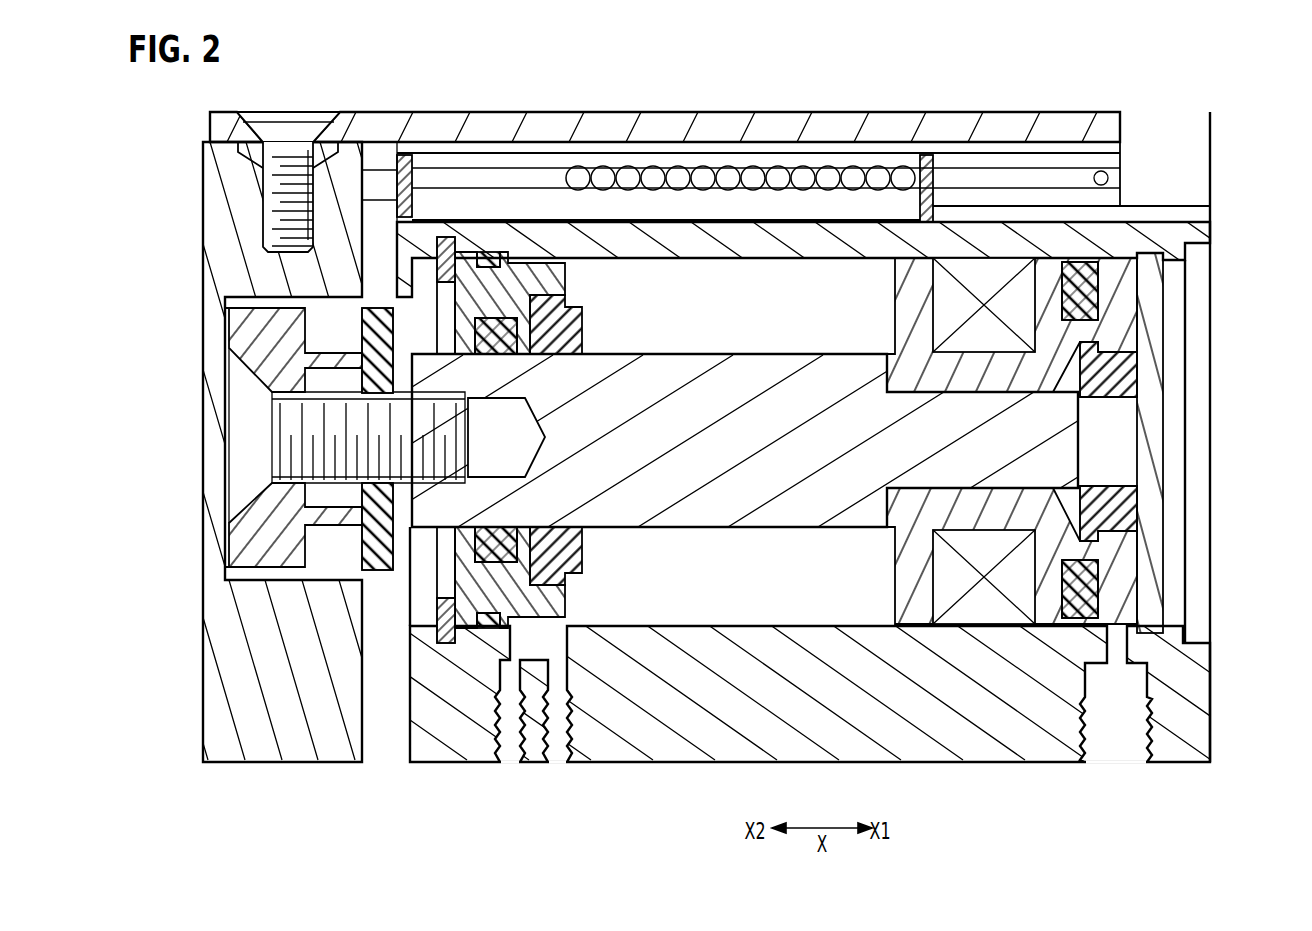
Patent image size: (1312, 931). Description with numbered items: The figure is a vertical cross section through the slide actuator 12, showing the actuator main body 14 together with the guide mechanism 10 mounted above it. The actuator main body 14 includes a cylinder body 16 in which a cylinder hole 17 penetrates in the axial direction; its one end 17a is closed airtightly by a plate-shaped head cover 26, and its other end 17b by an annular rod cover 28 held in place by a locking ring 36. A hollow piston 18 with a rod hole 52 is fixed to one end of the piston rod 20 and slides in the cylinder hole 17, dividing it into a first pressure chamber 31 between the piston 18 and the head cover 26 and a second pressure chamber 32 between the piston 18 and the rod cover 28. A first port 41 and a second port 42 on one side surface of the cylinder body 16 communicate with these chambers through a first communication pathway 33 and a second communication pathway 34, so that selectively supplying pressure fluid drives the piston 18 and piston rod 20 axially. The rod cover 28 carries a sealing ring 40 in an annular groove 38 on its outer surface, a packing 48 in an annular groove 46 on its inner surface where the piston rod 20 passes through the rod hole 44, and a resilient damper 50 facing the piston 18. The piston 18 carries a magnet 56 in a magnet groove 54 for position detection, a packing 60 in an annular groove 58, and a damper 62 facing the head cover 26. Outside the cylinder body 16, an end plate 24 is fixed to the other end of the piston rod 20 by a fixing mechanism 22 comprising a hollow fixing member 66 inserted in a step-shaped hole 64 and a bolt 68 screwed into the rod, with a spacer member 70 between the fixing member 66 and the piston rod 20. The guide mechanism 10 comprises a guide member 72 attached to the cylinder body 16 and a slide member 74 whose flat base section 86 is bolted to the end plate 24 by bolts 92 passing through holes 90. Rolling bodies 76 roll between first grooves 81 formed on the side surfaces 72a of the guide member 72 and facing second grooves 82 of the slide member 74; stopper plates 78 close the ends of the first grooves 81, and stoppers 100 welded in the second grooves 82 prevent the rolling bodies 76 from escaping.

The guide mechanism 10 is at (760, 112).
The slide actuator 12 is at (361, 60).
The actuator main body 14 is at (203, 169).
The cylinder body 16 is at (660, 757).
The cylinder hole 17 is at (812, 287).
The one end of the cylinder hole 17a is at (1185, 256).
The other end of the cylinder hole 17b is at (437, 252).
The piston 18 is at (913, 565).
The piston rod 20 is at (680, 365).
The fixing mechanism 22 is at (145, 325).
The end plate 24 is at (300, 748).
The head cover 26 is at (1158, 398).
The rod cover 28 is at (475, 595).
The first pressure chamber 31 is at (1133, 560).
The second pressure chamber 32 is at (717, 603).
The first communication pathway 33 is at (1122, 655).
The second communication pathway 34 is at (533, 645).
The locking ring 36 is at (443, 640).
The annular groove 38 is at (484, 253).
The sealing ring 40 is at (490, 257).
The first port 41 is at (1123, 753).
The second port 42 is at (538, 755).
The rod hole 44 is at (530, 526).
The annular groove 46 is at (503, 330).
The packing 48 is at (481, 352).
The damper 50 is at (582, 316).
The rod hole 52 is at (923, 393).
The magnet groove 54 is at (957, 350).
The magnet 56 is at (972, 278).
The annular groove 58 is at (1120, 362).
The packing 60 is at (1085, 283).
The damper 62 is at (1133, 512).
The step-shaped hole 64 is at (213, 583).
The fixing member 66 is at (237, 337).
The bolt 68 is at (245, 408).
The spacer member 70 is at (375, 572).
The guide member 72 is at (558, 153).
The side surfaces of the guide member 72a is at (447, 165).
The slide member 74 is at (650, 112).
The rolling bodies 76 is at (693, 185).
The stopper plates 78 is at (404, 165).
The first grooves 81 is at (497, 178).
The second grooves 82 is at (1075, 180).
The base section 86 is at (605, 114).
The holes 90 is at (243, 128).
The bolts 92 is at (292, 127).
The stoppers 100 is at (1108, 178).